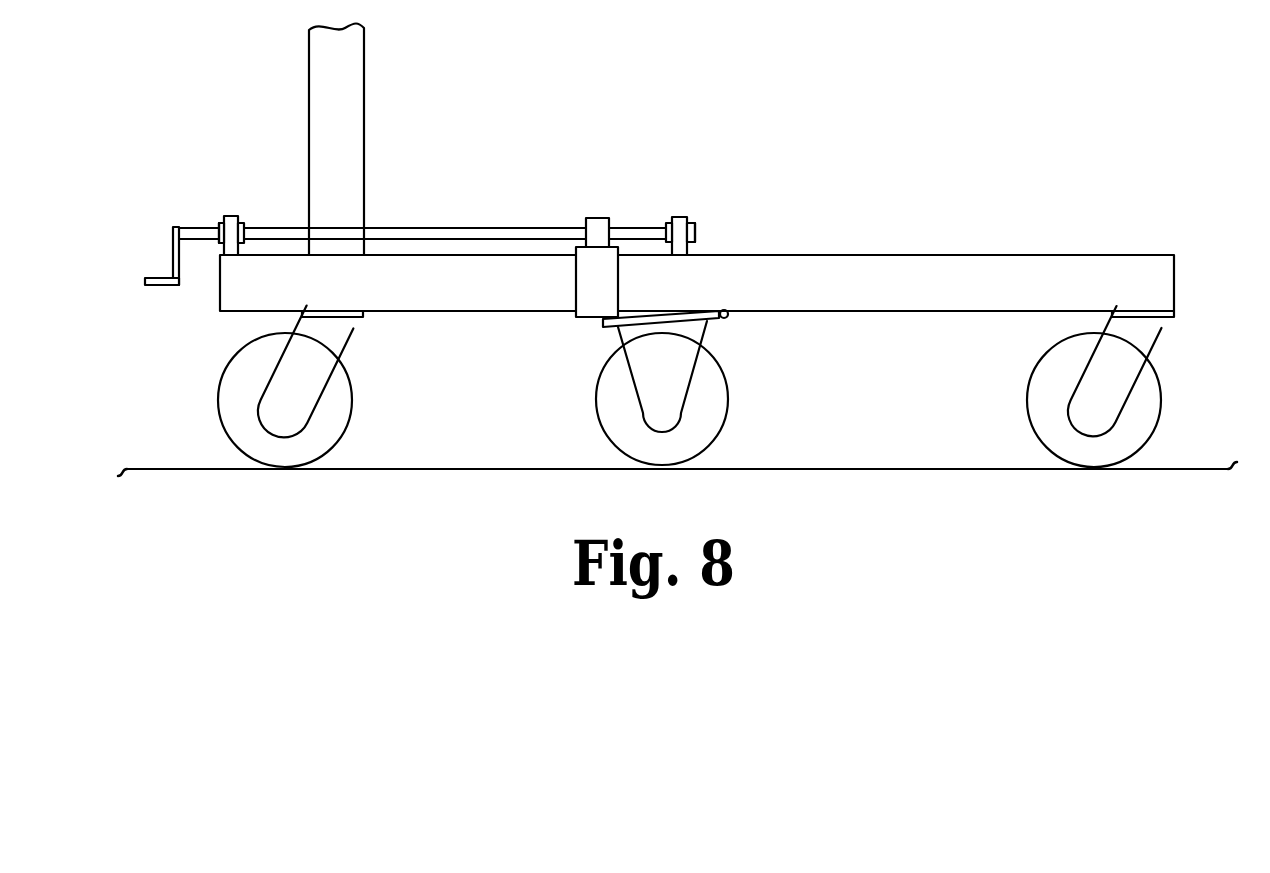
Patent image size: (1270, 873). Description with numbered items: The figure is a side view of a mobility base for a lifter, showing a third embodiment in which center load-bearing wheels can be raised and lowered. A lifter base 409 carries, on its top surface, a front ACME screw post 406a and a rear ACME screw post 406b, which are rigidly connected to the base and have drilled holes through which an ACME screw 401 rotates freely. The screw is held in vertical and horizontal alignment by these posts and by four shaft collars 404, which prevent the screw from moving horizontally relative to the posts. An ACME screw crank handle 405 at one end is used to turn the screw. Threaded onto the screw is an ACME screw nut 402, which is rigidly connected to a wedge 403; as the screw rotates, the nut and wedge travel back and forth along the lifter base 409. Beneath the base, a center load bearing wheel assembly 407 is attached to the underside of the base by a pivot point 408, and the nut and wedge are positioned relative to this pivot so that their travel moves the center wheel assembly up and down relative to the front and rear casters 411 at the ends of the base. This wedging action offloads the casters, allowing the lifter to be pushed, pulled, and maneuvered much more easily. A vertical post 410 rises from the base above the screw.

The ACME screw 401 is at (440, 232).
The ACME screw nut 402 is at (600, 230).
The wedge 403 is at (612, 272).
The shaft collar 404 is at (221, 226).
The ACME screw crank handle 405 is at (162, 284).
The front ACME screw post 406a is at (680, 238).
The rear ACME screw post 406b is at (228, 233).
The center load bearing wheel assembly 407 is at (673, 400).
The pivot point 408 is at (730, 315).
The lifter base 409 is at (972, 268).
The vertical post 410 is at (325, 85).
The caster 411 is at (283, 415).